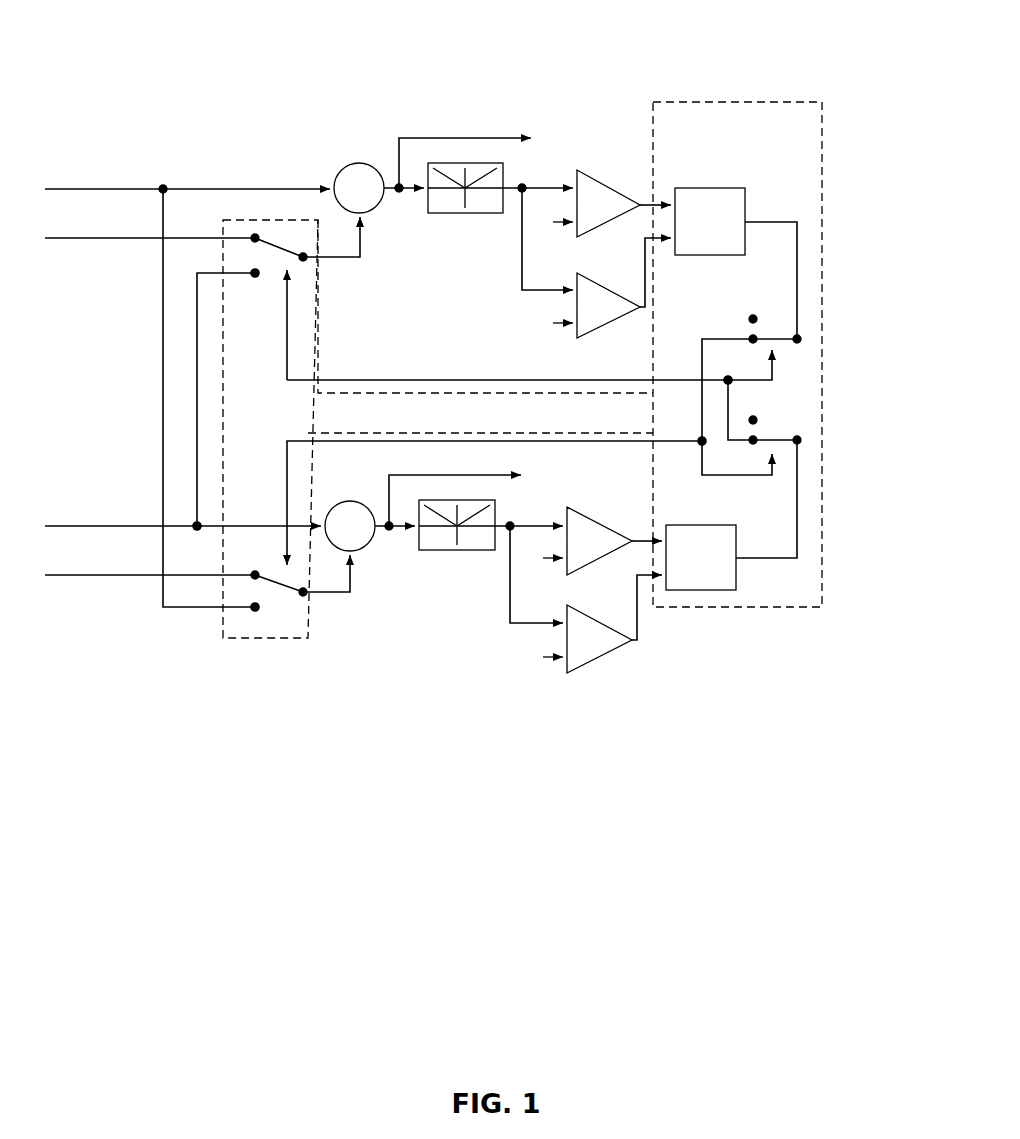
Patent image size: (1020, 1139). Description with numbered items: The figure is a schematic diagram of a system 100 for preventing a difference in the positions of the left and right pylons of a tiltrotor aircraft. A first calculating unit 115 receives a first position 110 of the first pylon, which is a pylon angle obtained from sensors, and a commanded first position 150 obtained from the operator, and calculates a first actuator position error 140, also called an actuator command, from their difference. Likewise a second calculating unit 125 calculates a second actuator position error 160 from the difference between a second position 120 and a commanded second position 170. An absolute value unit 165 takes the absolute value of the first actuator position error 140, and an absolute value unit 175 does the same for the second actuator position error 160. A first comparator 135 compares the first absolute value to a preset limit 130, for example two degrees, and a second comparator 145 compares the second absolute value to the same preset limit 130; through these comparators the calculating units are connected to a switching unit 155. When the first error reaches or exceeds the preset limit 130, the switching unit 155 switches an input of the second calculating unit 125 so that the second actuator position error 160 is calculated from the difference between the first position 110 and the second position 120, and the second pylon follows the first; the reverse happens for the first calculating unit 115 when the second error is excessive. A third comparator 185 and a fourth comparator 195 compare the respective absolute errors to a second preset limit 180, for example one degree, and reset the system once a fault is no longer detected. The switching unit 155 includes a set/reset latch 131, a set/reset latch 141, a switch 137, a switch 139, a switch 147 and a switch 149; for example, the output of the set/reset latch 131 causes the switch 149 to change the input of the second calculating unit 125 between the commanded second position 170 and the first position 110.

The system 100 is at (450, 792).
The first position 110 is at (145, 189).
The first calculating unit 115 is at (358, 163).
The second position 120 is at (140, 526).
The second calculating unit 125 is at (372, 545).
The preset limit 130 is at (558, 224).
The set/reset latch 131 is at (730, 188).
The first comparator 135 is at (615, 185).
The switch 137 is at (778, 352).
The switch 139 is at (292, 268).
The first actuator position error 140 is at (500, 137).
The set/reset latch 141 is at (715, 590).
The second comparator 145 is at (600, 518).
The switch 147 is at (775, 458).
The switch 149 is at (283, 555).
The commanded first position 150 is at (150, 238).
The switching unit 155 is at (730, 100).
The second actuator position error 160 is at (430, 476).
The absolute value unit 165 is at (440, 213).
The commanded second position 170 is at (150, 575).
The absolute value unit 175 is at (430, 550).
The second preset limit 180 is at (555, 326).
The third comparator 185 is at (612, 322).
The fourth comparator 195 is at (590, 655).